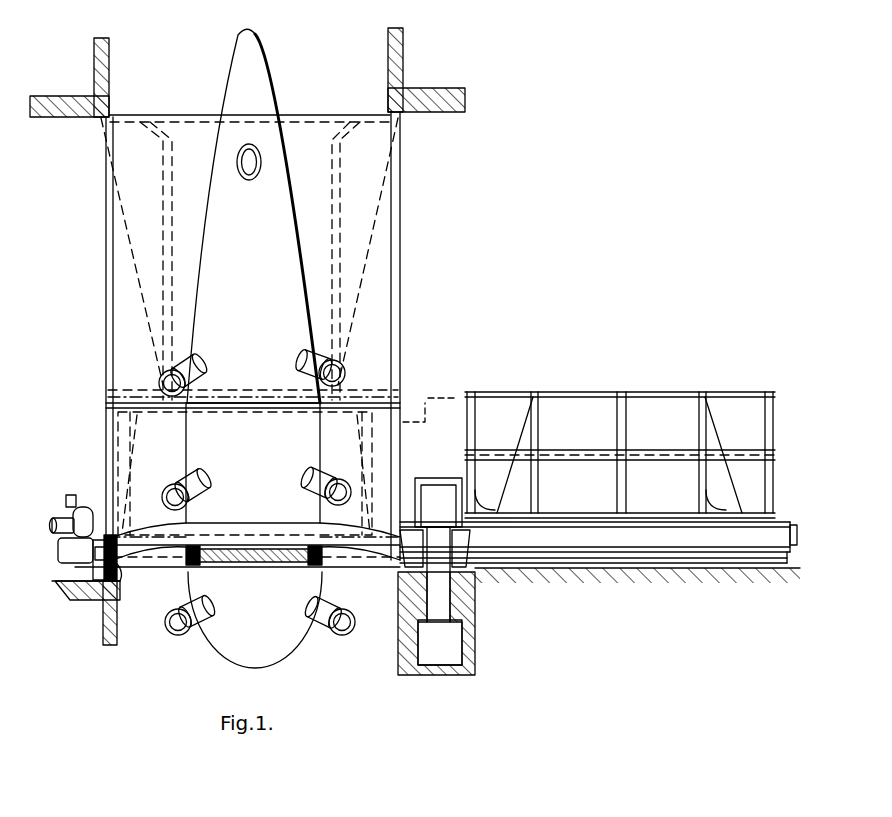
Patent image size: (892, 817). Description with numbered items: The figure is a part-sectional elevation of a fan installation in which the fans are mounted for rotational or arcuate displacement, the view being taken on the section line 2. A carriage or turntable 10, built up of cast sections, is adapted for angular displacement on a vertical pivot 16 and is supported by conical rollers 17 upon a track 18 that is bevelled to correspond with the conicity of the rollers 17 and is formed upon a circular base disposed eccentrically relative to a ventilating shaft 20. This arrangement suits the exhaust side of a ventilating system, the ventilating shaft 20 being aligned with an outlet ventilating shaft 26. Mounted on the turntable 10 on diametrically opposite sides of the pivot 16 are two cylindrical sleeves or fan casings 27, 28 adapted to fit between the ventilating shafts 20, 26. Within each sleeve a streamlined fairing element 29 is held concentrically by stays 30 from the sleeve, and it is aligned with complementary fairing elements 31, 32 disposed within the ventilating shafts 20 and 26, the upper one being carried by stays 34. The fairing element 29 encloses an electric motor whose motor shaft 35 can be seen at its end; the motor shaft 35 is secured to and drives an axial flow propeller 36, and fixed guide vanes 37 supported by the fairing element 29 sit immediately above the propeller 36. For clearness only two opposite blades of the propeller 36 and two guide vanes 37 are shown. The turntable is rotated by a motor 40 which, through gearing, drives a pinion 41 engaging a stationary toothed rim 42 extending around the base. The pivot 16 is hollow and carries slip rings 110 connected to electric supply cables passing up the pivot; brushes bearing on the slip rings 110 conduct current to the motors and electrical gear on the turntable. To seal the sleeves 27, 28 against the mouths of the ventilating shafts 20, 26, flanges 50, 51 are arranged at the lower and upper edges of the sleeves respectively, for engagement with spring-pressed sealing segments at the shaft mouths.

The section line 2 is at (110, 425).
The carriage or turntable 10 is at (593, 548).
The vertical pivot 16 is at (445, 575).
The conical rollers 17 is at (75, 585).
The track 18 is at (103, 617).
The ventilating shaft 20 is at (160, 640).
The outlet ventilating shaft 26 is at (110, 180).
The cylindrical sleeve or fan casing 27 is at (113, 445).
The cylindrical sleeve or fan casing 28 is at (770, 452).
The streamlined fairing element 29 is at (186, 446).
The stays 30 is at (305, 476).
The complementary fairing element 31 is at (232, 648).
The complementary fairing element 32 is at (248, 100).
The stays 34 is at (326, 358).
The motor shaft 35 is at (258, 562).
The axial flow propeller 36 is at (340, 567).
The fixed guide vanes 37 is at (332, 525).
The motor 40 is at (70, 512).
The pinion 41 is at (80, 565).
The stationary toothed rim 42 is at (86, 606).
The flange 50 is at (118, 580).
The flange 51 is at (428, 394).
The slip rings 110 is at (447, 490).